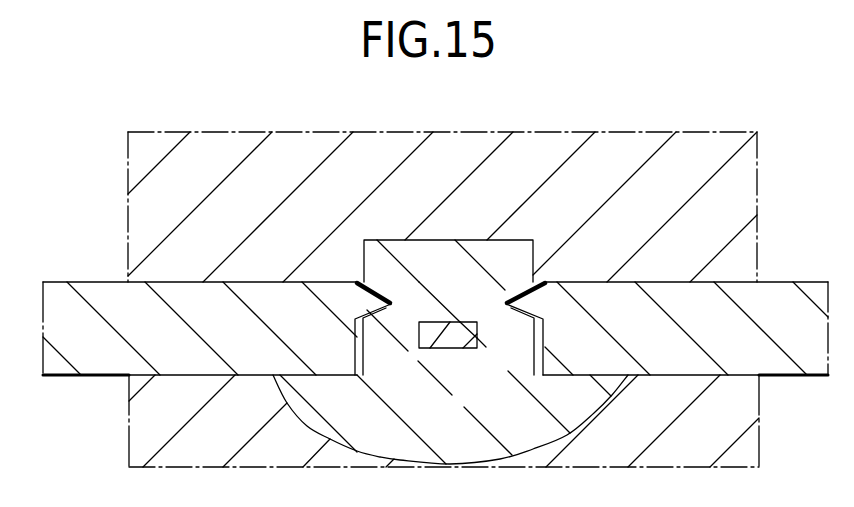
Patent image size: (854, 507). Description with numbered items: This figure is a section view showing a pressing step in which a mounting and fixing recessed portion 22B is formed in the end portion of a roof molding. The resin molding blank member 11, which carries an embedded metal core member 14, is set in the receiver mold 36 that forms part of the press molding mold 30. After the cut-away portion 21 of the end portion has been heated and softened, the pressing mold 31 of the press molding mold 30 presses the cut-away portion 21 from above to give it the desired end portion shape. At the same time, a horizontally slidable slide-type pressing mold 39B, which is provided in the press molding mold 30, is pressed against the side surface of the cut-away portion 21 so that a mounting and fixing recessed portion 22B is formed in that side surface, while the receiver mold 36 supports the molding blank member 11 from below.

The press molding mold 30 is at (473, 204).
The pressing mold 31 is at (752, 250).
The cut-away portion 21 is at (470, 240).
The metal core member 14 is at (472, 330).
The molding blank member 11 is at (462, 420).
The mounting and fixing recessed portion 22B is at (377, 313).
The slide-type pressing mold 39B is at (58, 367).
The receiver mold 36 is at (743, 457).